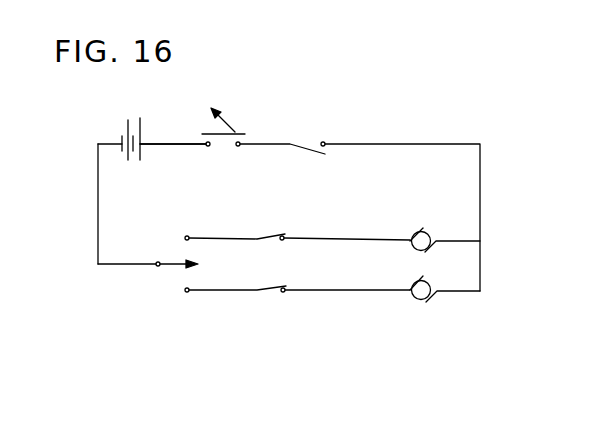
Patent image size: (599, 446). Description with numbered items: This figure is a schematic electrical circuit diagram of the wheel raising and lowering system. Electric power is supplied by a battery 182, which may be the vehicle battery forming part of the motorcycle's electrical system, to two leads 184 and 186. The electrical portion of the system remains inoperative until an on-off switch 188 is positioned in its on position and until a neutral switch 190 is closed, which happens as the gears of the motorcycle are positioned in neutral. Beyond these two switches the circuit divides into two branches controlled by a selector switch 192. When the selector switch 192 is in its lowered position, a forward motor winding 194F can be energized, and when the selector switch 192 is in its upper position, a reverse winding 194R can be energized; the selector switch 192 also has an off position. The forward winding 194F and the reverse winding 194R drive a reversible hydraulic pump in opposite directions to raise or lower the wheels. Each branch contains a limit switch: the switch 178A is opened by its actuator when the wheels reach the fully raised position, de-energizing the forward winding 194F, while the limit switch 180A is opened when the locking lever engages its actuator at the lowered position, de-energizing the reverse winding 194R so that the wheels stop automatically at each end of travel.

The battery 182 is at (140, 120).
The lead 186 is at (160, 144).
The on-off switch 188 is at (245, 134).
The neutral switch 190 is at (307, 145).
The lead 184 is at (98, 236).
The selector switch 192 is at (175, 267).
The limit switch 180A is at (258, 238).
The switch 178A is at (268, 289).
The reverse winding 194R is at (423, 234).
The forward motor winding 194F is at (410, 298).